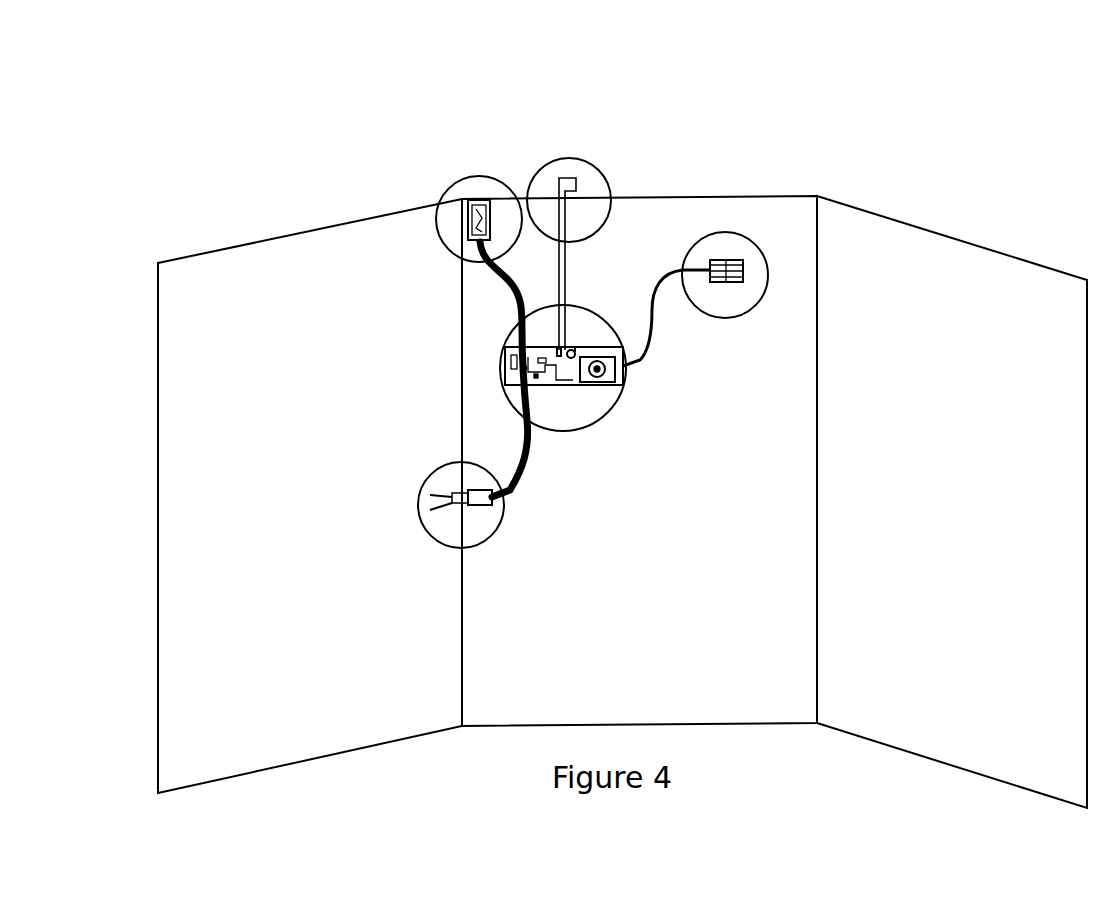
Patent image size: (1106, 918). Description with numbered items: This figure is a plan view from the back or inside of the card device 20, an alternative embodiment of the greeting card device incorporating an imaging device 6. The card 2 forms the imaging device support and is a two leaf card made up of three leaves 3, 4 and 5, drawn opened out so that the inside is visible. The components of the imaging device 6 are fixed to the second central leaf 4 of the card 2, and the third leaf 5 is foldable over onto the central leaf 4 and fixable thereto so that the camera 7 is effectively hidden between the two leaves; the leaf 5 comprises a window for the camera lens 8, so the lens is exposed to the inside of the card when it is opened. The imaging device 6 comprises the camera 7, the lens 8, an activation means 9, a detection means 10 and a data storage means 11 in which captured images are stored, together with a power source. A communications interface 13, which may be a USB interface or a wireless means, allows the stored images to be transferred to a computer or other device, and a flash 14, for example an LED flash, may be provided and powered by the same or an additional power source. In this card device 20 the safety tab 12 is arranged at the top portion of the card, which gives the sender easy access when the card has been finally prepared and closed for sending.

The card 2 is at (183, 728).
The first leaf 3 is at (180, 777).
The second central leaf 4 is at (517, 715).
The third leaf 5 is at (868, 718).
The imaging device 6 is at (670, 82).
The camera 7 is at (598, 354).
The lens 8 is at (605, 377).
The activation means 9 is at (562, 348).
The detection means 10 is at (490, 540).
The data storage means 11 is at (575, 347).
The safety tab 12 is at (612, 173).
The communications interface 13 is at (515, 178).
The flash 14 is at (728, 232).
The card device 20 is at (1012, 192).